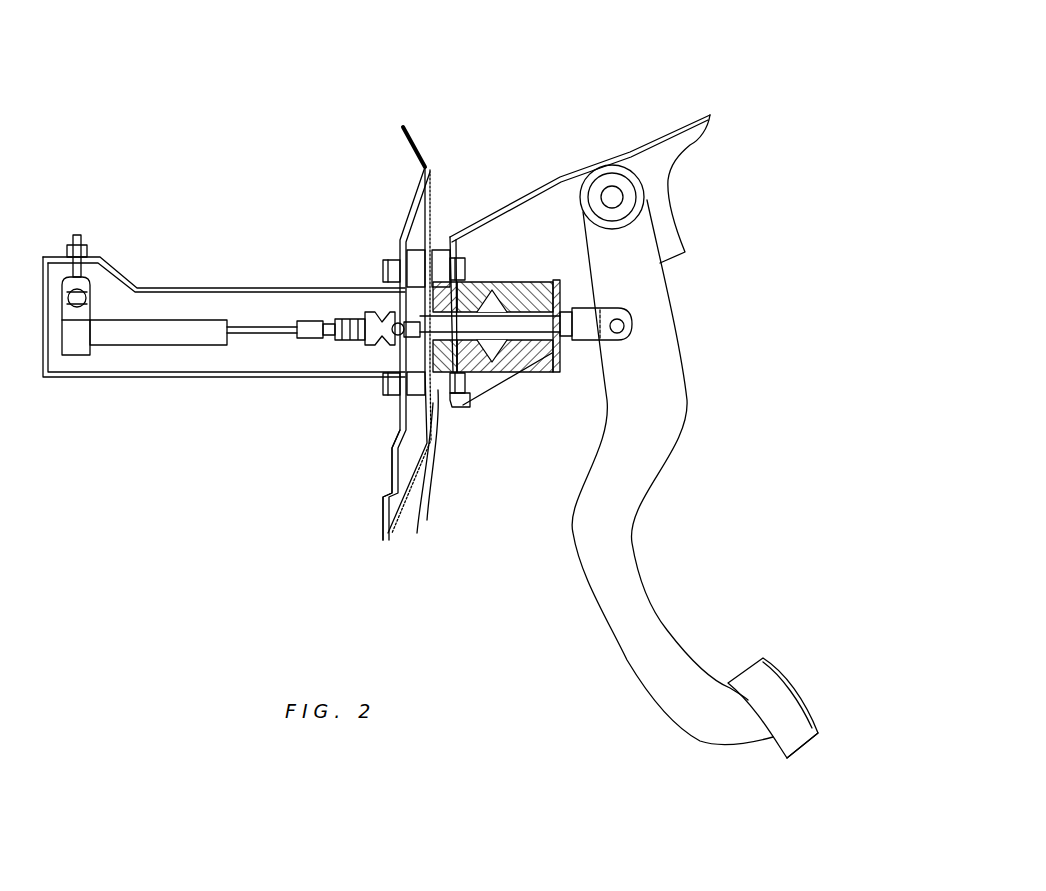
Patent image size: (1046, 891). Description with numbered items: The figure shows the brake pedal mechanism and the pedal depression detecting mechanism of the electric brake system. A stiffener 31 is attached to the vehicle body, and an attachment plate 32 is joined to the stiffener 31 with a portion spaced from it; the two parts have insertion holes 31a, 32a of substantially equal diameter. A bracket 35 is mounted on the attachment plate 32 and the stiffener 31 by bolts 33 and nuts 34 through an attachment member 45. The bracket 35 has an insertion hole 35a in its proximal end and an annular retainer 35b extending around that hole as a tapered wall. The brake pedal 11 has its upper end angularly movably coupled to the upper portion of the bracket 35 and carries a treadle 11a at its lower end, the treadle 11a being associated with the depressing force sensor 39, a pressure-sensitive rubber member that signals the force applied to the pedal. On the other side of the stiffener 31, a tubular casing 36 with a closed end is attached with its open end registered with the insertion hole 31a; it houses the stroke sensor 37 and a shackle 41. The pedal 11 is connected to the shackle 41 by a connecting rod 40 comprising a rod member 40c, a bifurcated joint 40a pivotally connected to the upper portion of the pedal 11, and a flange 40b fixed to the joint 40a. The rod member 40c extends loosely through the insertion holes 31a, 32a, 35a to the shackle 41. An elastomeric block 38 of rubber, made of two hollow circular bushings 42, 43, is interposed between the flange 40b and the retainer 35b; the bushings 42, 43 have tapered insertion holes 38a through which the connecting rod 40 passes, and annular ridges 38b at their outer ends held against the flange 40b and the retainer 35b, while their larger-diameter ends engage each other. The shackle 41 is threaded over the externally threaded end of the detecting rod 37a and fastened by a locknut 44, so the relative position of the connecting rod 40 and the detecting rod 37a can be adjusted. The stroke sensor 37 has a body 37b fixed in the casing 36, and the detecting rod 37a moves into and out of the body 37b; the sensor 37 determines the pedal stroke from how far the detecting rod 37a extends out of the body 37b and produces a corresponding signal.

The brake pedal 11 is at (627, 533).
The treadle 11a is at (793, 742).
The stiffener 31 is at (415, 147).
The insertion hole 31a is at (395, 292).
The attachment plate 32 is at (420, 190).
The insertion hole 32a is at (393, 475).
The bolts 33 is at (468, 287).
The nuts 34 is at (397, 263).
The bracket 35 is at (678, 130).
The insertion hole 35a is at (432, 217).
The annular retainer 35b is at (452, 243).
The tubular casing 36 is at (212, 377).
The stroke sensor 37 is at (108, 340).
The detecting rod 37a is at (252, 330).
The body 37b is at (175, 330).
The elastomeric block 38 is at (505, 372).
The insertion holes 38a is at (423, 335).
The annular ridges 38b is at (460, 260).
The depressing force sensor 39 is at (807, 700).
The connecting rod 40 is at (565, 312).
The bifurcated joint 40a is at (620, 340).
The flange 40b is at (580, 402).
The rod member 40c is at (513, 372).
The shackle 41 is at (363, 340).
The bushing 42 is at (467, 407).
The bushing 43 is at (505, 290).
The locknut 44 is at (333, 340).
The attachment member 45 is at (412, 500).